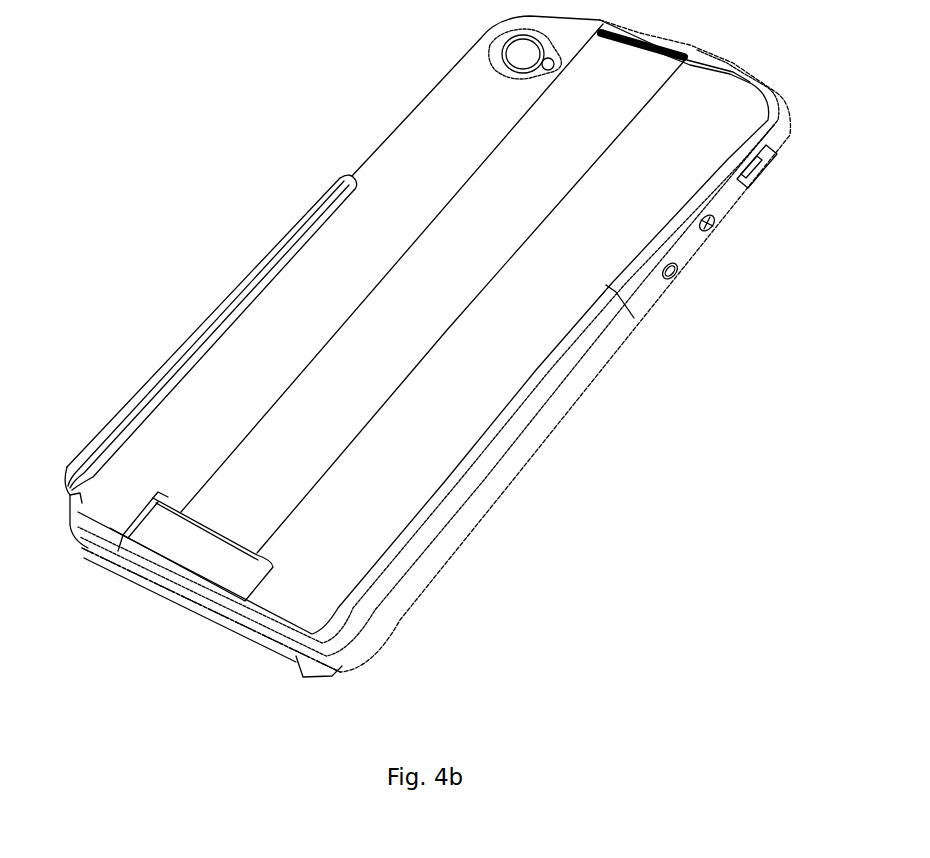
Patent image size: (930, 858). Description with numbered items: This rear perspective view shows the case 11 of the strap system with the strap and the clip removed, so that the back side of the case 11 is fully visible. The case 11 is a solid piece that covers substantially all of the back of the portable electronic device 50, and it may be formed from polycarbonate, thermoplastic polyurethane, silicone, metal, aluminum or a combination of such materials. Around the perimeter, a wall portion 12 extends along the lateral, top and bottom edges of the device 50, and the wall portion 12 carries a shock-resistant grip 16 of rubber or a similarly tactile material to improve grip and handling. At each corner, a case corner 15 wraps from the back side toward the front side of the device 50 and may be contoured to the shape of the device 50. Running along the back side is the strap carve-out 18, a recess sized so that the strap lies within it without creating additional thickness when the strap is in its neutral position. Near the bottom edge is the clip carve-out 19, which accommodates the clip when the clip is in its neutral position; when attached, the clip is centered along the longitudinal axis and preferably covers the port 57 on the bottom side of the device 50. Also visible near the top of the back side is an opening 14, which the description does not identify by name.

The case 11 is at (634, 438).
The wall portion 12 is at (260, 643).
The camera opening 14 is at (490, 53).
The case corners 15 is at (792, 137).
The shock-resistant grip 16 is at (204, 324).
The strap carve-out 18 is at (528, 216).
The clip carve-out 19 is at (248, 580).
The portable electronic device 50 is at (693, 252).
The port 57 is at (170, 588).